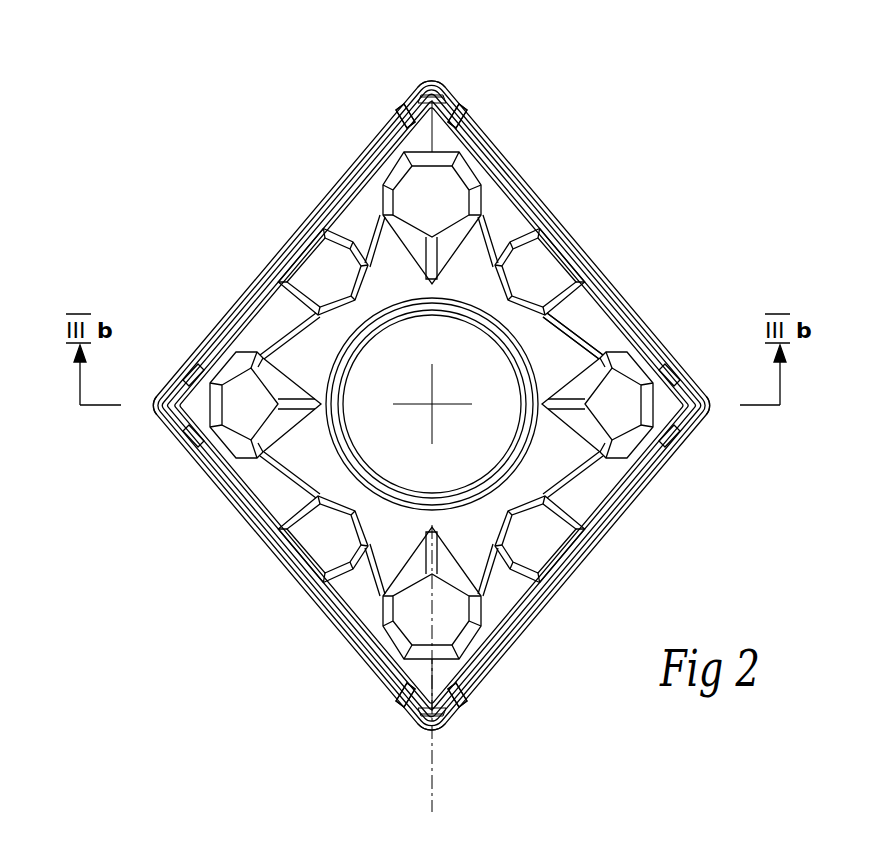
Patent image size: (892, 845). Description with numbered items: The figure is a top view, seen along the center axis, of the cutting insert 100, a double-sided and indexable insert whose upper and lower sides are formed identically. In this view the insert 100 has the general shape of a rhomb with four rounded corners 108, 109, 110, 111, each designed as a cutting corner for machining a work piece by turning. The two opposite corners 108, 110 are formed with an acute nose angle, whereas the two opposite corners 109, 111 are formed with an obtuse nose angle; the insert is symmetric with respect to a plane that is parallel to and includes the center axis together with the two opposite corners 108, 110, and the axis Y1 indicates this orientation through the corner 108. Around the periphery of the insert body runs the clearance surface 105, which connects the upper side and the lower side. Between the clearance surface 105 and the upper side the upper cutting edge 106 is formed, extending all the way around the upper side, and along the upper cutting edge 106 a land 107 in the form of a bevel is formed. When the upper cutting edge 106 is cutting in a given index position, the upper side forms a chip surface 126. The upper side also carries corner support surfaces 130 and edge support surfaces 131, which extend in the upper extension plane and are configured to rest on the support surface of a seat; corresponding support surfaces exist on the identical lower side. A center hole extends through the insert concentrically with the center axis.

The cutting insert 100 is at (676, 272).
The clearance surface 105 is at (479, 256).
The upper cutting edge 106 is at (648, 484).
The land 107 is at (510, 592).
The rounded corner 108 is at (438, 734).
The rounded corner 109 is at (154, 410).
The rounded corner 110 is at (428, 76).
The rounded corner 111 is at (710, 410).
The chip surface 126 is at (503, 596).
The corner support surface 130 is at (430, 192).
The edge support surface 131 is at (546, 272).
The axis Y1 is at (430, 767).